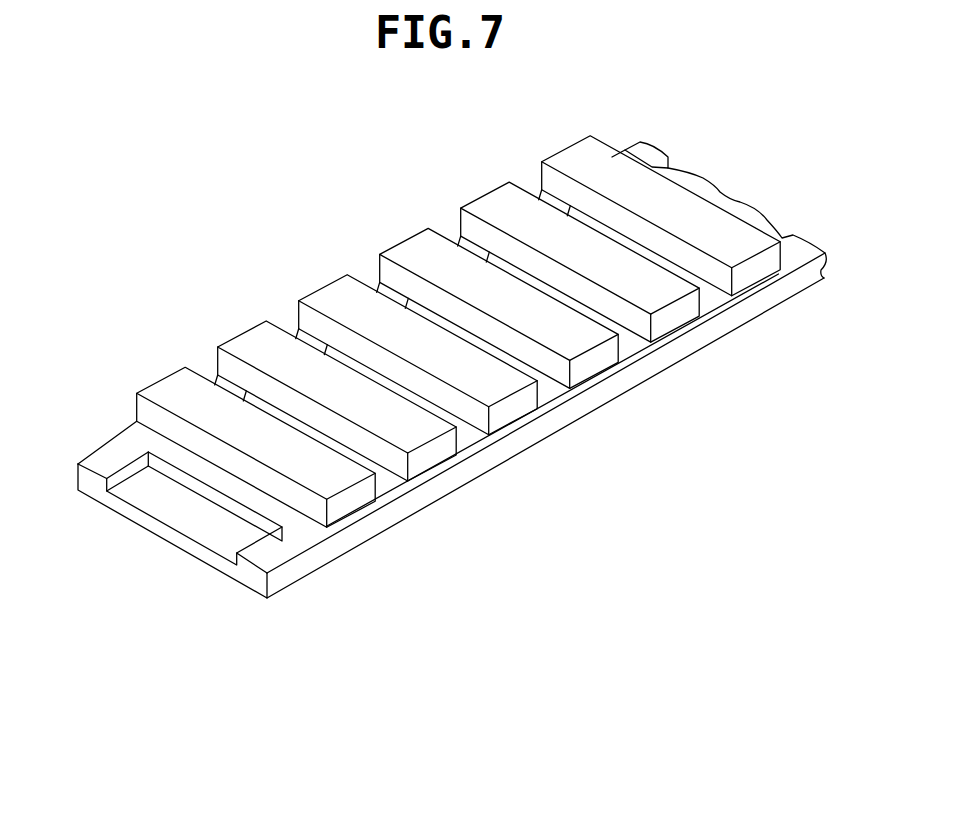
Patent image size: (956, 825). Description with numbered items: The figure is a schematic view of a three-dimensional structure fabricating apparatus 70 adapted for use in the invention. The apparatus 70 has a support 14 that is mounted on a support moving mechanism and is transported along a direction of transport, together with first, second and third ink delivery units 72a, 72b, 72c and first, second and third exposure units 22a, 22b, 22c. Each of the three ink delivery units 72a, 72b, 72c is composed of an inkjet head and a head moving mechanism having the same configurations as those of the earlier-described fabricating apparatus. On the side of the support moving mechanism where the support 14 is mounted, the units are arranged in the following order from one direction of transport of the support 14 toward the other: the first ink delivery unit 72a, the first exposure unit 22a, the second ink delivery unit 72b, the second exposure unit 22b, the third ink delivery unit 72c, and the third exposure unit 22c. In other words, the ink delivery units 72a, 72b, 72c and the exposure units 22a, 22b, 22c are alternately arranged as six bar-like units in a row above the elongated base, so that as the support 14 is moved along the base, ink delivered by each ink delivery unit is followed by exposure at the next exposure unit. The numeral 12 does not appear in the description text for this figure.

The three-dimensional structure fabricating apparatus 70 is at (285, 188).
The base plate 12 is at (302, 570).
The support 14 is at (213, 483).
The first ink delivery unit 72a is at (355, 500).
The first exposure unit 22a is at (437, 470).
The second ink delivery unit 72b is at (520, 410).
The second exposure unit 22b is at (598, 370).
The third ink delivery unit 72c is at (680, 322).
The third exposure unit 22c is at (765, 275).